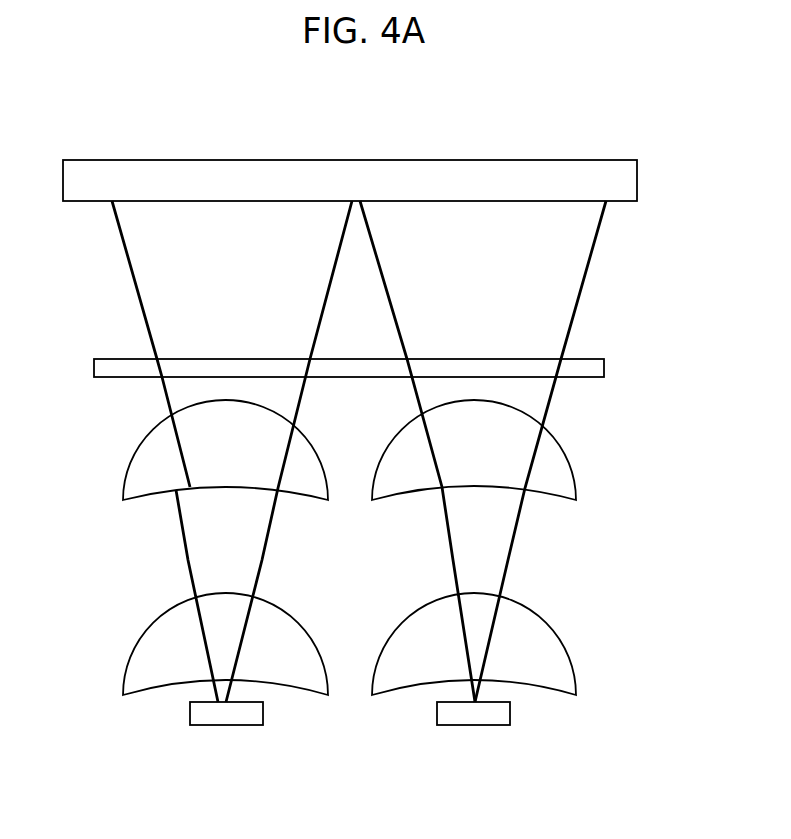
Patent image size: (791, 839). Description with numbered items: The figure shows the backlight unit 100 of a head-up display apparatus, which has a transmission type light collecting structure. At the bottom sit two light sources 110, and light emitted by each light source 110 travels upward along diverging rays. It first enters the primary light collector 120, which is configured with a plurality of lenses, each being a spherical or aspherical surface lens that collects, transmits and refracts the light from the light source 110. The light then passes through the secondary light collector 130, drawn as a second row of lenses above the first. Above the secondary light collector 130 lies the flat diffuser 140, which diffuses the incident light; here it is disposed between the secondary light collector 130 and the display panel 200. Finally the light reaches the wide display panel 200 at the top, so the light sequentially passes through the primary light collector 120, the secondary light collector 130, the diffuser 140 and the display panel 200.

The backlight unit 100 is at (97, 87).
The display panel 200 is at (625, 182).
The diffuser 140 is at (594, 369).
The secondary light collector 130 is at (558, 473).
The primary light collector 120 is at (564, 665).
The light source 110 is at (507, 715).